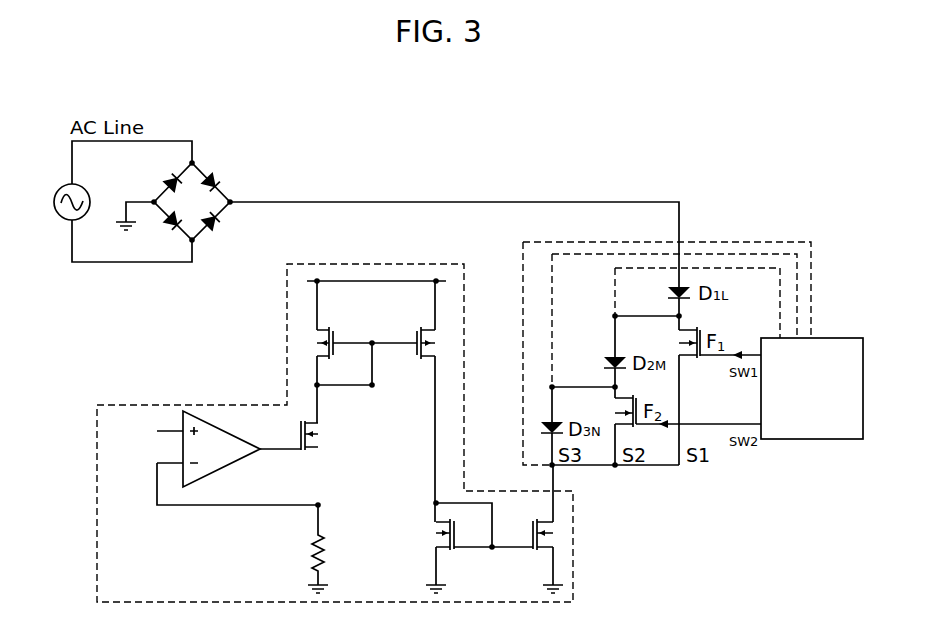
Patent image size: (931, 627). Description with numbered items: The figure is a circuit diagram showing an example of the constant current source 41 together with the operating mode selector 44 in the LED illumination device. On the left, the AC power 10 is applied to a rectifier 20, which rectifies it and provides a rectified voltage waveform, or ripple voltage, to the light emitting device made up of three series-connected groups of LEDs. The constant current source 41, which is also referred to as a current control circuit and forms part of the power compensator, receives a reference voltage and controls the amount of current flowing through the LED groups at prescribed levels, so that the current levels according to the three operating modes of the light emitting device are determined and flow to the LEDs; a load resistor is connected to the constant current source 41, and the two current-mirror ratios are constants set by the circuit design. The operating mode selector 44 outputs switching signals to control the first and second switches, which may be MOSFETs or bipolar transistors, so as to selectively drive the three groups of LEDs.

The AC power 10 is at (53, 203).
The rectifier 20 is at (233, 160).
The constant current source 41 is at (97, 505).
The operating mode selector 44 is at (813, 440).